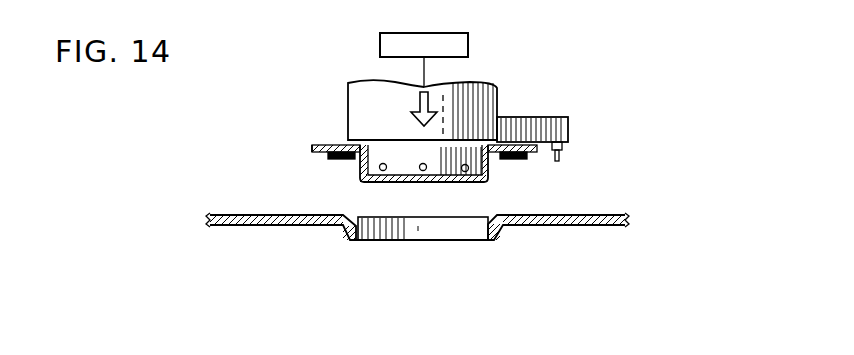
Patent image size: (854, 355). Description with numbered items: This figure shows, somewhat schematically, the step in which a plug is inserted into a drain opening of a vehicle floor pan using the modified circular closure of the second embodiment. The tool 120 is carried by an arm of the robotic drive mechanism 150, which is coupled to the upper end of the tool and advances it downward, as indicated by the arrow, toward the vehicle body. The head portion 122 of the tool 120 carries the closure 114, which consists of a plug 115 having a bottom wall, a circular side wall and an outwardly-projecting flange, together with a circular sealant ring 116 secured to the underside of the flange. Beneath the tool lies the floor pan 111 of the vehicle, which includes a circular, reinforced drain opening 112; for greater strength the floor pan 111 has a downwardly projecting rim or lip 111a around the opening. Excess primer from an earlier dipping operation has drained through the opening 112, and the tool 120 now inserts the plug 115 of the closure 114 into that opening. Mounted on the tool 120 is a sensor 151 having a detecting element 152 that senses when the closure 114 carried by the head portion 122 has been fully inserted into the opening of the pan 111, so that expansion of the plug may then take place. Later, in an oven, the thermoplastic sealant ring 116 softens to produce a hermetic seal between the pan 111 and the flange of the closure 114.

The drive mechanism 150 is at (468, 46).
The tool 120 is at (347, 102).
The sensor 151 is at (548, 117).
The detecting element 152 is at (565, 155).
The closure 114 is at (323, 144).
The plug 115 is at (312, 150).
The sealant ring 116 is at (338, 160).
The head portion 122 is at (409, 167).
The floor pan 111 is at (580, 218).
The downwardly projecting rim or lip 111a is at (500, 234).
The drain opening 112 is at (460, 228).